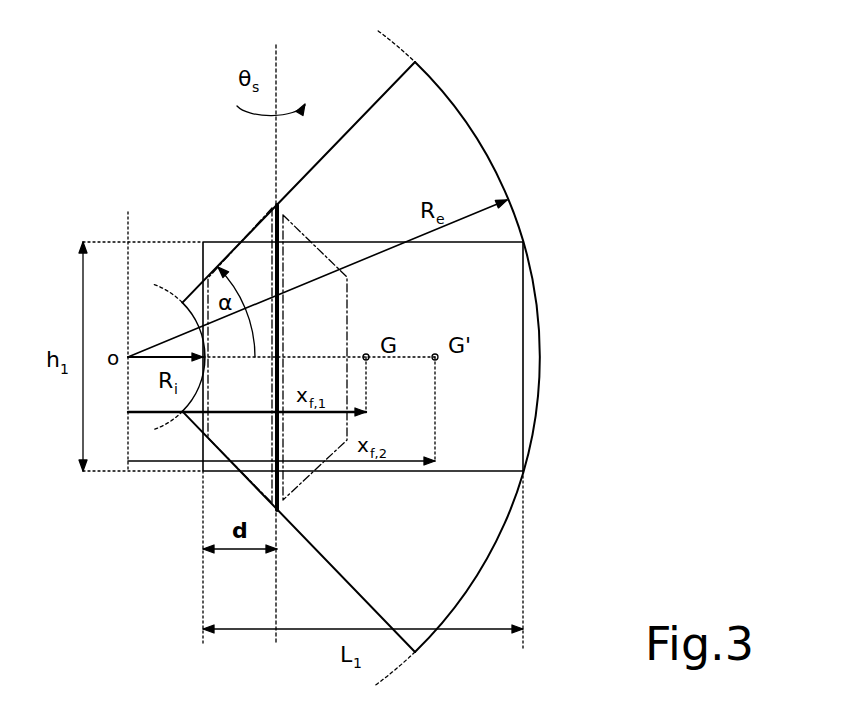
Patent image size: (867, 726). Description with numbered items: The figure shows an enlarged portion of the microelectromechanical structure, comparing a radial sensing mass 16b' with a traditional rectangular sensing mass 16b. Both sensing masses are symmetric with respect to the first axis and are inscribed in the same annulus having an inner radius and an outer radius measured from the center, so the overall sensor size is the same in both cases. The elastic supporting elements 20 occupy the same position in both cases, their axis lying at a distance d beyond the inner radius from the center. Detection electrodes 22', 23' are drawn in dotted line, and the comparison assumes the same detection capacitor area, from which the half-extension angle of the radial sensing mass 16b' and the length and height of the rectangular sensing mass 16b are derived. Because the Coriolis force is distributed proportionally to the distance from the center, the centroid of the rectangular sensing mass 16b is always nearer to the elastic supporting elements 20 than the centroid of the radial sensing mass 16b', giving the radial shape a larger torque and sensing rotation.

The rectangular sensing mass 16b is at (492, 359).
The radial sensing mass 16b' is at (298, 345).
The elastic supporting elements 20 is at (281, 210).
The detection electrode 22' is at (344, 352).
The detection electrode 23' is at (240, 318).